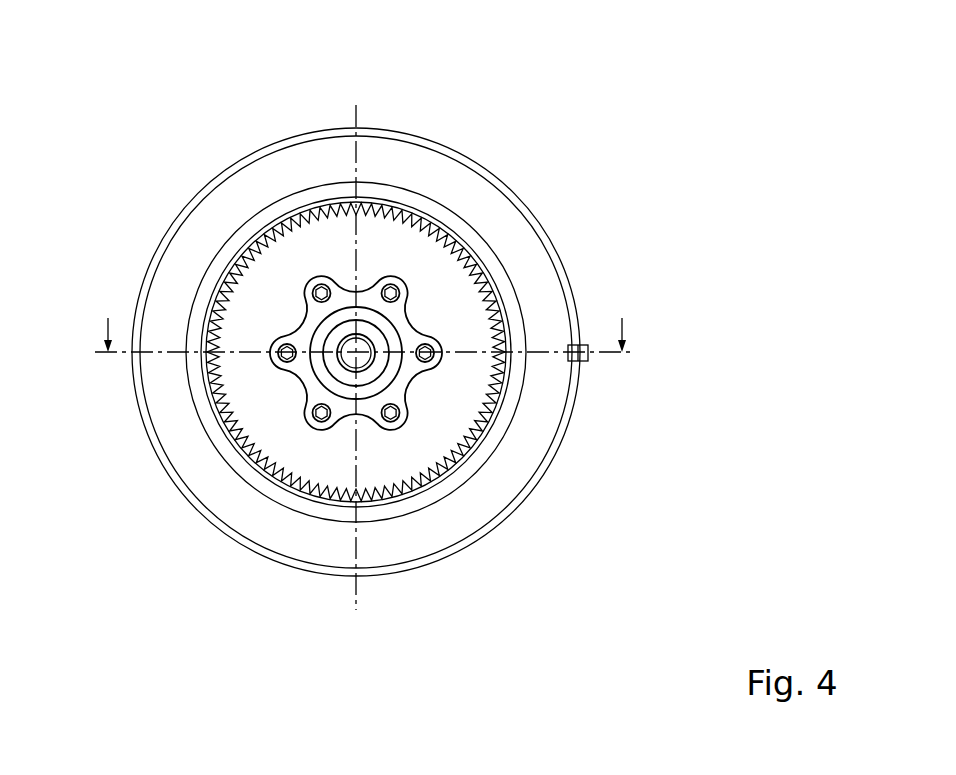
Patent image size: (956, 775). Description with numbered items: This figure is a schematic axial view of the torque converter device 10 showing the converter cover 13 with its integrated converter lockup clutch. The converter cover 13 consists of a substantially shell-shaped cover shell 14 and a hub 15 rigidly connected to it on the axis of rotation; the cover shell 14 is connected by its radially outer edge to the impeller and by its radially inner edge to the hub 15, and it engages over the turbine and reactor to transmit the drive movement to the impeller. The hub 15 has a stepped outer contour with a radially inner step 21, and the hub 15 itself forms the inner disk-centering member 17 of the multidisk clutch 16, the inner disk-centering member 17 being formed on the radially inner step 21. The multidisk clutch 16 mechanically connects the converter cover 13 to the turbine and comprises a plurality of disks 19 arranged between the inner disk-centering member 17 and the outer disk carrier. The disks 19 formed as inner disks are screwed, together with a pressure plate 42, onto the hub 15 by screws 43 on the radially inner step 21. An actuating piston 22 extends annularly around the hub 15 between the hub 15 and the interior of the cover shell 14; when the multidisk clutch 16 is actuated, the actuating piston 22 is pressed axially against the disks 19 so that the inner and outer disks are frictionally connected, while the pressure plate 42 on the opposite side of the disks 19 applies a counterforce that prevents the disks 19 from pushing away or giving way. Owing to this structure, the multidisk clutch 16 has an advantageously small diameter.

The torque converter device 10 is at (489, 137).
The converter cover 13 is at (416, 125).
The cover shell 14 is at (472, 193).
The hub 15 is at (333, 378).
The multidisk clutch 16 is at (474, 241).
The inner disk-centering member 17 is at (424, 390).
The disks 19 is at (318, 207).
The radially inner step 21 is at (313, 332).
The actuating piston 22 is at (220, 428).
The pressure plate 42 is at (276, 265).
The screws 43 is at (387, 428).